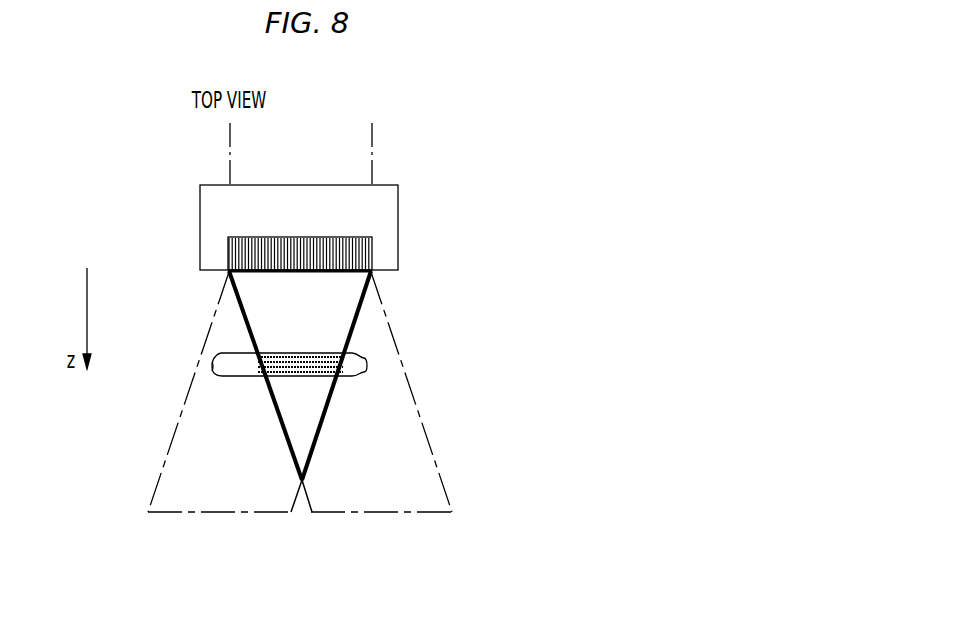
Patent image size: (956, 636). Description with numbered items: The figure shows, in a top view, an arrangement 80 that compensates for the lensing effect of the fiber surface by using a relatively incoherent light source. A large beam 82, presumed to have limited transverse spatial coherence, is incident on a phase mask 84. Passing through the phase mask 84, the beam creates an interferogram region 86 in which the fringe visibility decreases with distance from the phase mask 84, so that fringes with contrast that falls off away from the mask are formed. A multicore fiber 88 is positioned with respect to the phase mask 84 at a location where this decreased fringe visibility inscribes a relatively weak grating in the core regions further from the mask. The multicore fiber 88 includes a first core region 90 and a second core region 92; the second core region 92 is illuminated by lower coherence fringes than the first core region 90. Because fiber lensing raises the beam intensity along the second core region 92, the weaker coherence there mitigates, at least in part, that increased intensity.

The arrangement 80 is at (112, 166).
The large beam 82 is at (355, 140).
The phase mask 84 is at (373, 247).
The interferogram region 86 is at (338, 292).
The multicore fiber 88 is at (223, 378).
The first core region 90 is at (345, 357).
The second core region 92 is at (343, 371).